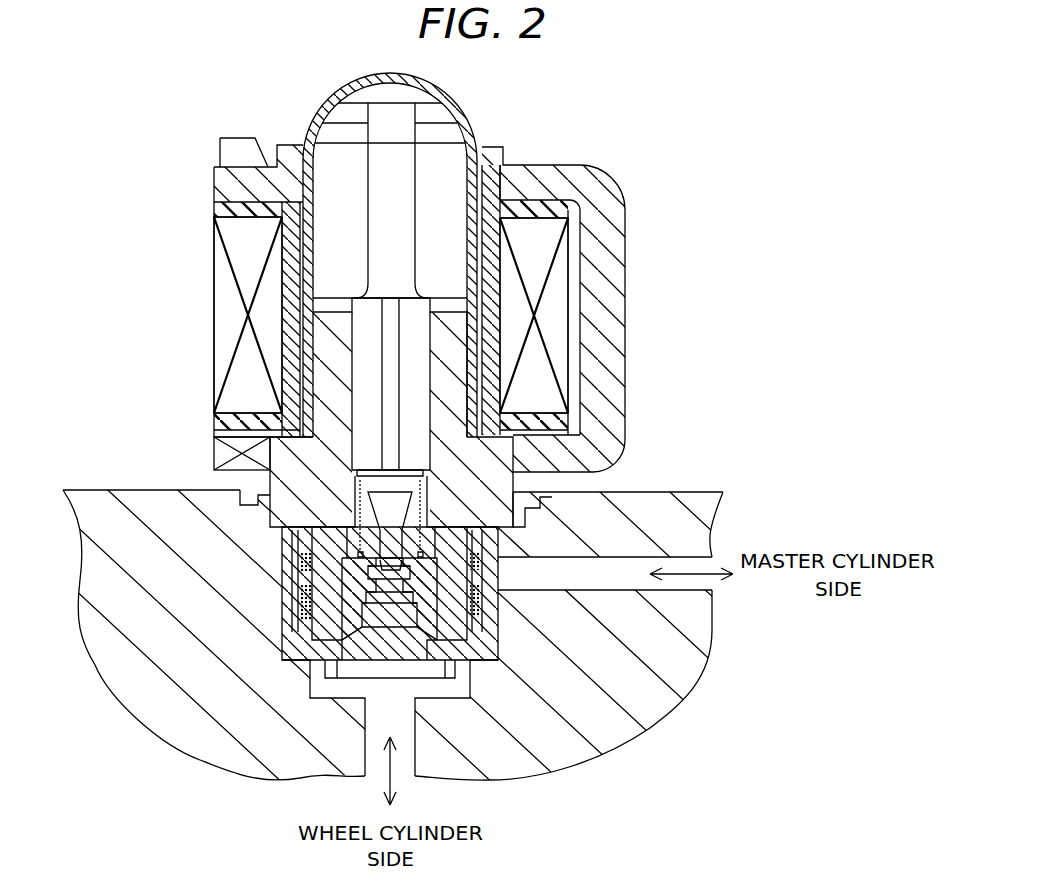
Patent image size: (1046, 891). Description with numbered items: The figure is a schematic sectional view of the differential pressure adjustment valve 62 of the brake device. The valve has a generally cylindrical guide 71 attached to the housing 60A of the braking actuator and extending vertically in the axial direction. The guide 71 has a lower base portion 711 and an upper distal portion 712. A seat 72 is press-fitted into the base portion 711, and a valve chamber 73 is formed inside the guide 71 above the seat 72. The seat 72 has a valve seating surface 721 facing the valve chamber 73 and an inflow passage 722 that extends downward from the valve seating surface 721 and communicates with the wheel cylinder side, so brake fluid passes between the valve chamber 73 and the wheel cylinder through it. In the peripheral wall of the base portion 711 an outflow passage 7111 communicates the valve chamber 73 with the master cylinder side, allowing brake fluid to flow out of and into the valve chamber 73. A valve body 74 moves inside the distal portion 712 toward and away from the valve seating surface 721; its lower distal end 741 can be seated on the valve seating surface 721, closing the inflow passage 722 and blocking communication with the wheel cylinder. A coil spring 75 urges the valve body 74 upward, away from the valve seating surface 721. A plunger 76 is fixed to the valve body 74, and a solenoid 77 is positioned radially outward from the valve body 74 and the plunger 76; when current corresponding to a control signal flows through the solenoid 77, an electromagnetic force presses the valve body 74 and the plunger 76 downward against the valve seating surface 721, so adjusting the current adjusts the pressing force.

The differential pressure adjustment valve 62 is at (665, 113).
The plunger 76 is at (316, 160).
The solenoid 77 is at (575, 312).
The coil spring 75 is at (262, 420).
The guide 71 is at (128, 428).
The distal portion 712 is at (250, 462).
The base portion 711 is at (255, 500).
The outflow passage 7111 is at (518, 565).
The housing 60A is at (713, 492).
The valve body 74 is at (432, 492).
The valve chamber 73 is at (410, 533).
The seat 72 is at (282, 617).
The valve seating surface 721 is at (462, 660).
The inflow passage 722 is at (375, 604).
The distal end 741 is at (428, 605).